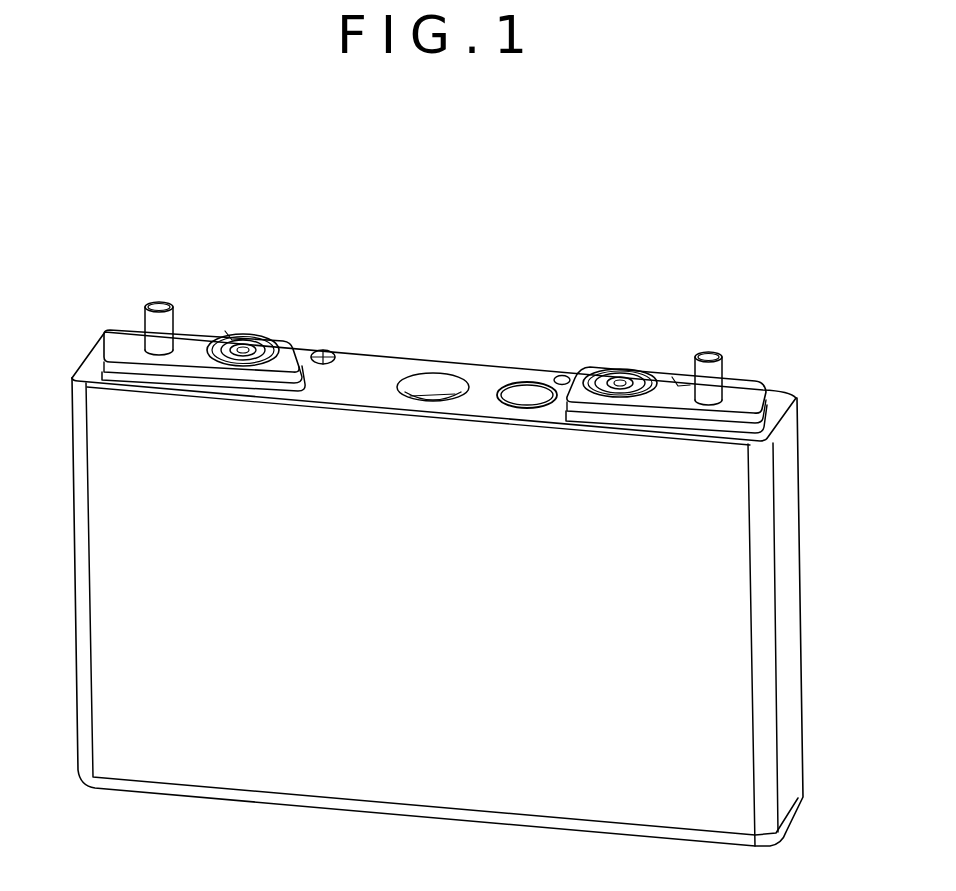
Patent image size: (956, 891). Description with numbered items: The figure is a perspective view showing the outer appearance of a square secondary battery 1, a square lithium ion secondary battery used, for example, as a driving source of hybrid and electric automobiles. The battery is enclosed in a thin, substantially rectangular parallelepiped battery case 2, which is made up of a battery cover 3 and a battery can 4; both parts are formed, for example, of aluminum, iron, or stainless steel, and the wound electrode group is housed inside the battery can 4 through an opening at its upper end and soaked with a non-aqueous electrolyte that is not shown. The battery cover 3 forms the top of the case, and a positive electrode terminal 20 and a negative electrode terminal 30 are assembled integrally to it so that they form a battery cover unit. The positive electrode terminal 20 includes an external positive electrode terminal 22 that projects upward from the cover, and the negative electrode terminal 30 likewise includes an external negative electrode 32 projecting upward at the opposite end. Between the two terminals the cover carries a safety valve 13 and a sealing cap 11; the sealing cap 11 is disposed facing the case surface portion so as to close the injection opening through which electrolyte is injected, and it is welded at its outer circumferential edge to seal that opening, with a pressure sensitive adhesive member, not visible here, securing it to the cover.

The square secondary battery 1 is at (598, 217).
The battery case 2 is at (398, 258).
The battery cover 3 is at (345, 370).
The battery can 4 is at (378, 433).
The sealing cap 11 is at (528, 395).
The safety valve 13 is at (433, 384).
The positive electrode terminal 20 is at (193, 300).
The external positive electrode terminal 22 is at (140, 345).
The negative electrode terminal 30 is at (698, 330).
The external negative electrode 32 is at (735, 395).